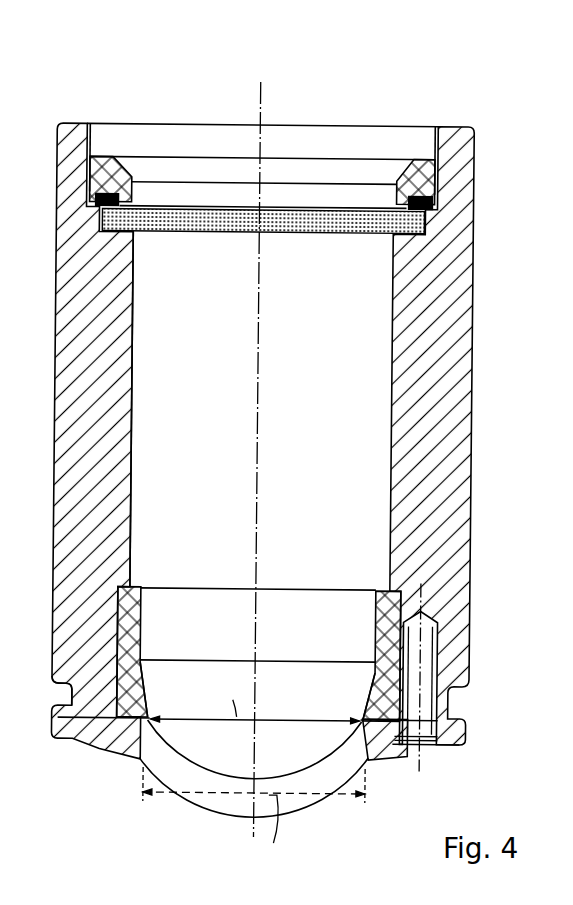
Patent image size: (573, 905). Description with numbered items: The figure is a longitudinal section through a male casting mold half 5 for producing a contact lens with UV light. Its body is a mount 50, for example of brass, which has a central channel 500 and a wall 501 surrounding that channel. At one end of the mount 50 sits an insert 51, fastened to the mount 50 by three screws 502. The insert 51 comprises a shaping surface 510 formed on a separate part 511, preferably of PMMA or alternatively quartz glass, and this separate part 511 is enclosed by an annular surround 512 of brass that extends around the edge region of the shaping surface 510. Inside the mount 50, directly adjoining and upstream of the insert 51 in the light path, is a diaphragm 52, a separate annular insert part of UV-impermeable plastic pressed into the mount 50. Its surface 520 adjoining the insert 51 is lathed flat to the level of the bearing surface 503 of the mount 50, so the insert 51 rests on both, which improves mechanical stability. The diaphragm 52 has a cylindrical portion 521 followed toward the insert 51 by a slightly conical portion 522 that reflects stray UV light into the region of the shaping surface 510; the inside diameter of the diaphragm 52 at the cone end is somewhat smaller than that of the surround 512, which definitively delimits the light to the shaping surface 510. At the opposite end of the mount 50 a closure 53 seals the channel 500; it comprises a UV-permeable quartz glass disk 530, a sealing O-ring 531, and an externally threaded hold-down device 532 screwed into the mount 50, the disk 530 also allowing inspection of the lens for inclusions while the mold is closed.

The male casting mold half 5 is at (281, 450).
The mount 50 is at (271, 455).
The channel 500 is at (347, 485).
The wall 501 is at (113, 374).
The screws 502 is at (433, 735).
The bearing surface 503 is at (74, 710).
The insert 51 is at (234, 798).
The shaping surface 510 is at (232, 818).
The separate part 511 is at (188, 778).
The annular surround 512 is at (385, 752).
The diaphragm 52 is at (160, 626).
The surface of the diaphragm 520 is at (143, 711).
The cylindrical portion 521 is at (344, 655).
The slightly conical portion 522 is at (377, 679).
The closure 53 is at (262, 164).
The disk 530 is at (183, 208).
The sealing O-ring 531 is at (392, 226).
The hold-down device 532 is at (404, 160).